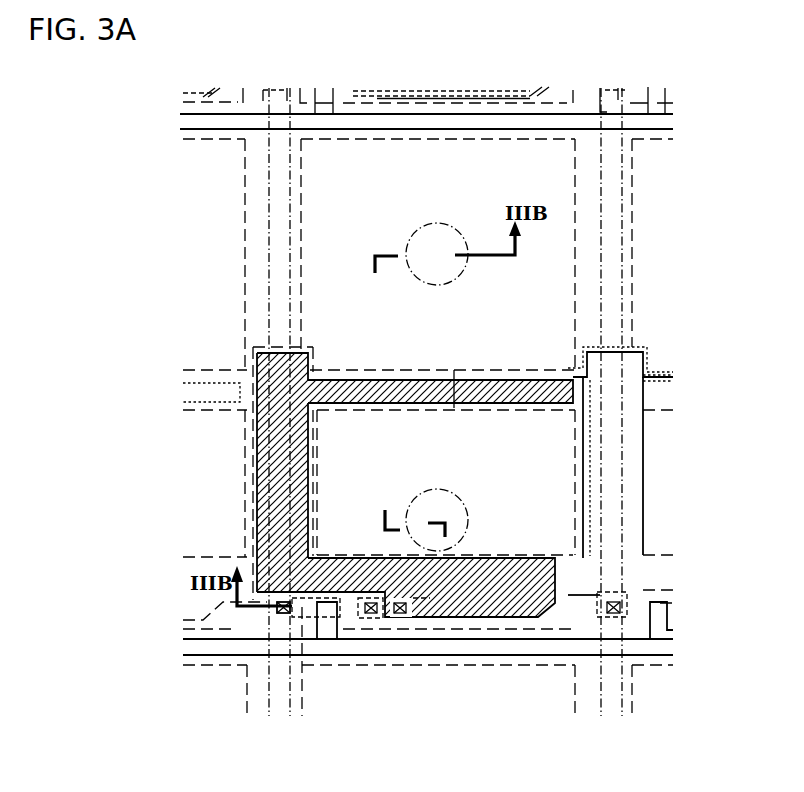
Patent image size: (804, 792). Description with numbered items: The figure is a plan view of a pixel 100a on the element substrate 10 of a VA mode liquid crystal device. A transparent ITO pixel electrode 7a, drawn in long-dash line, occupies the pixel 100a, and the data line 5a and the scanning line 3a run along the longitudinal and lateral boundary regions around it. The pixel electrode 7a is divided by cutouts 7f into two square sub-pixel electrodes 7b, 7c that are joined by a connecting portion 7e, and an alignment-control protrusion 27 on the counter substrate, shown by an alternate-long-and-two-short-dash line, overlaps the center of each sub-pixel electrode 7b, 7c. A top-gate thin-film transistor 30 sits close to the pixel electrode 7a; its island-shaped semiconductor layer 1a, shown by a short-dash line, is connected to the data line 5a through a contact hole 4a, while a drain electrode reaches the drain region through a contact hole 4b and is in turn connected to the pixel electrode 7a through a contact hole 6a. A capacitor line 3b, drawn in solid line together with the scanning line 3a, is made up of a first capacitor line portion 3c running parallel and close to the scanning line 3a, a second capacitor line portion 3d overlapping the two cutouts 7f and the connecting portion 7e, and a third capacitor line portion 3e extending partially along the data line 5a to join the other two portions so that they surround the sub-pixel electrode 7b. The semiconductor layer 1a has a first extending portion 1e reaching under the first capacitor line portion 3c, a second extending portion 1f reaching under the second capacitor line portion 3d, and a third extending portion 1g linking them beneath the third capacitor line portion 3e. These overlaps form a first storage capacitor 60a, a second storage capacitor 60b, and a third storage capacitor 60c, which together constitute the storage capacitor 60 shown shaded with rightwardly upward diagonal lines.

The pixel 100a is at (448, 124).
The element substrate 10 is at (692, 189).
The data line 5a is at (292, 76).
The alignment-control protrusion 27 is at (433, 222).
The pixel electrode 7a is at (720, 212).
The sub-pixel electrode 7b is at (577, 437).
The sub-pixel electrode 7c is at (573, 270).
The second extending portion 1f is at (326, 372).
The cutout 7f is at (430, 358).
The connecting portion 7e is at (448, 406).
The storage capacitor 60 is at (416, 428).
The first storage capacitor 60a is at (424, 587).
The second storage capacitor 60b is at (349, 400).
The third storage capacitor 60c is at (322, 471).
The scanning line 3a is at (168, 637).
The capacitor line 3b is at (98, 440).
The first capacitor line portion 3c is at (176, 600).
The second capacitor line portion 3d is at (176, 373).
The third capacitor line portion 3e is at (257, 483).
The third extending portion 1g is at (247, 500).
The semiconductor layer 1a is at (309, 612).
The first extending portion 1e is at (480, 617).
The contact hole 4a is at (283, 612).
The contact hole 4b is at (373, 616).
The contact hole 6a is at (401, 614).
The thin-film transistor 30 is at (353, 650).